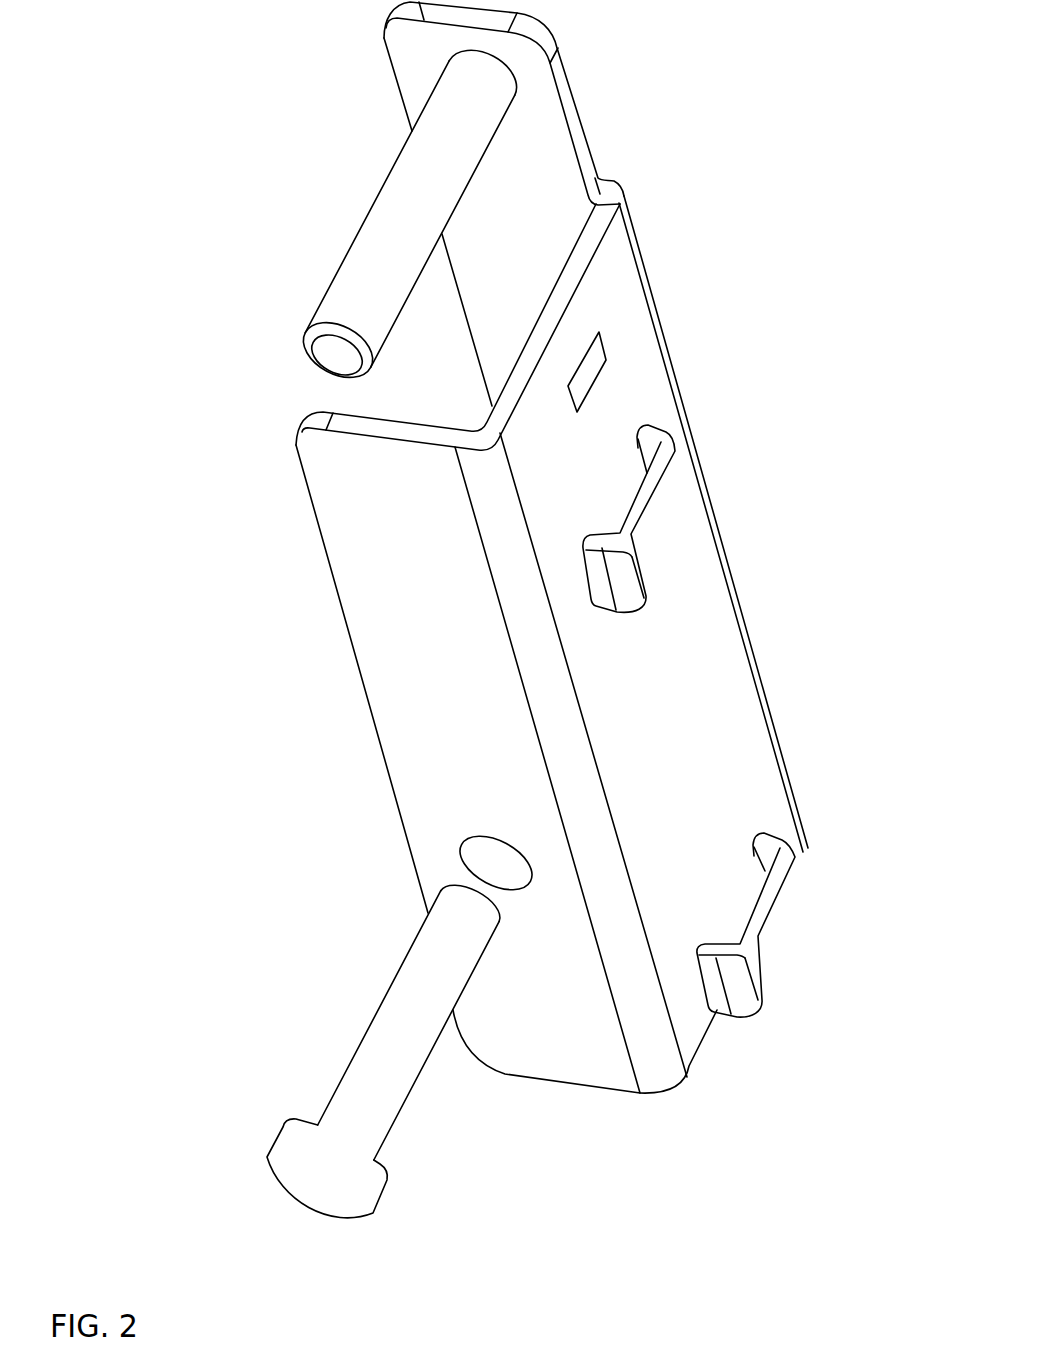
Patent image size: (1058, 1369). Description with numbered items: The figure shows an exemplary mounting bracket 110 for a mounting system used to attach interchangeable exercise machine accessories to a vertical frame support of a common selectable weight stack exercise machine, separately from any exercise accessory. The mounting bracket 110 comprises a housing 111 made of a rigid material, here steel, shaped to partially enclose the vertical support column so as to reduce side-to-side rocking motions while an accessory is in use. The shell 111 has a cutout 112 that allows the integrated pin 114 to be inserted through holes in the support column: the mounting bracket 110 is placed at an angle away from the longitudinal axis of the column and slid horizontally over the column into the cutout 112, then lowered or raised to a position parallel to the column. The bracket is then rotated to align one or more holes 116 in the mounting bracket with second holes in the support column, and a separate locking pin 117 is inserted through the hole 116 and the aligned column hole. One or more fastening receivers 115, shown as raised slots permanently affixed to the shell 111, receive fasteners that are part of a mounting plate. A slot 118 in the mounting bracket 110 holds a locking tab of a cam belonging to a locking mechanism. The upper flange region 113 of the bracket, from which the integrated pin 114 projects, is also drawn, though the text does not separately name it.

The mounting bracket 110 is at (156, 985).
The housing 111 is at (530, 1018).
The cutout 112 is at (412, 437).
The upper flange 113 is at (567, 108).
The integrated pin 114 is at (438, 155).
The fastening receivers 115 is at (660, 518).
The holes 116 is at (492, 862).
The separate locking pin 117 is at (402, 1022).
The slot 118 is at (587, 363).